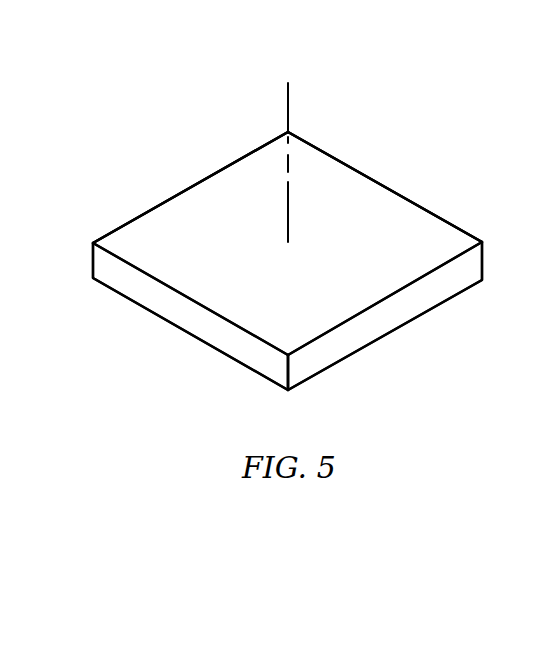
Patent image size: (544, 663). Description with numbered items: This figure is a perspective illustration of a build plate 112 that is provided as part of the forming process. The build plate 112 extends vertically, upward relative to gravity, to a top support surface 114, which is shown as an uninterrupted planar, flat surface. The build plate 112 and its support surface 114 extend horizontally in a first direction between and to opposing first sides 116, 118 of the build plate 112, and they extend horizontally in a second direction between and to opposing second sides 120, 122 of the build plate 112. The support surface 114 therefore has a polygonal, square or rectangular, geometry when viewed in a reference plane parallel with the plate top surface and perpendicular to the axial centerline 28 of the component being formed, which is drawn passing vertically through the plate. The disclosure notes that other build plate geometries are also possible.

The axial centerline 28 is at (288, 99).
The build plate 112 is at (392, 163).
The top support surface 114 is at (427, 248).
The first side 116 is at (210, 316).
The first side 118 is at (399, 193).
The second side 120 is at (199, 183).
The second side 122 is at (369, 310).